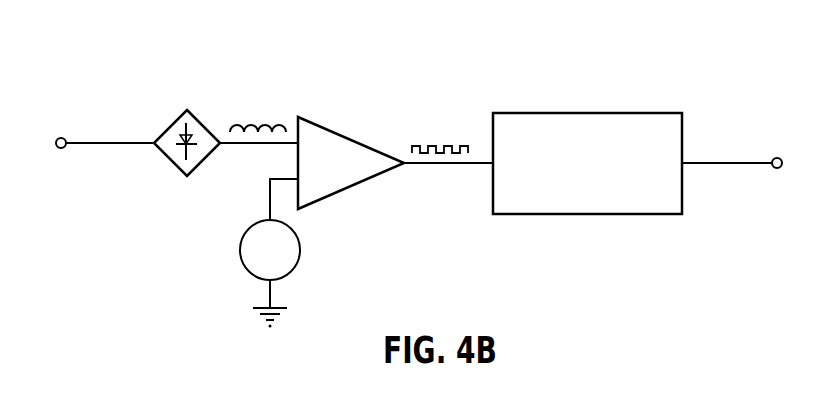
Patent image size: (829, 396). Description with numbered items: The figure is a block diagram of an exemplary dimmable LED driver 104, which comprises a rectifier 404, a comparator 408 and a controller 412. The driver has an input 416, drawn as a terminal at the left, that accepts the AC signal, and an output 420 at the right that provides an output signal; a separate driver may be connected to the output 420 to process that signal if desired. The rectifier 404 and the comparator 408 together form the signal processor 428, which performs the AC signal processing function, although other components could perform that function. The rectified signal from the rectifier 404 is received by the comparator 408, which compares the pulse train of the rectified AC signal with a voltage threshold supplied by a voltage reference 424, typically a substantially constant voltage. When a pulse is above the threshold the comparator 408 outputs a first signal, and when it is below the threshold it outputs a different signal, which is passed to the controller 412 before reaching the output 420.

The dimmable LED driver 104 is at (407, 75).
The rectifier 404 is at (196, 120).
The comparator 408 is at (341, 134).
The controller 412 is at (585, 112).
The input 416 is at (60, 137).
The output 420 is at (776, 157).
The voltage reference 424 is at (300, 252).
The signal processor 428 is at (243, 71).